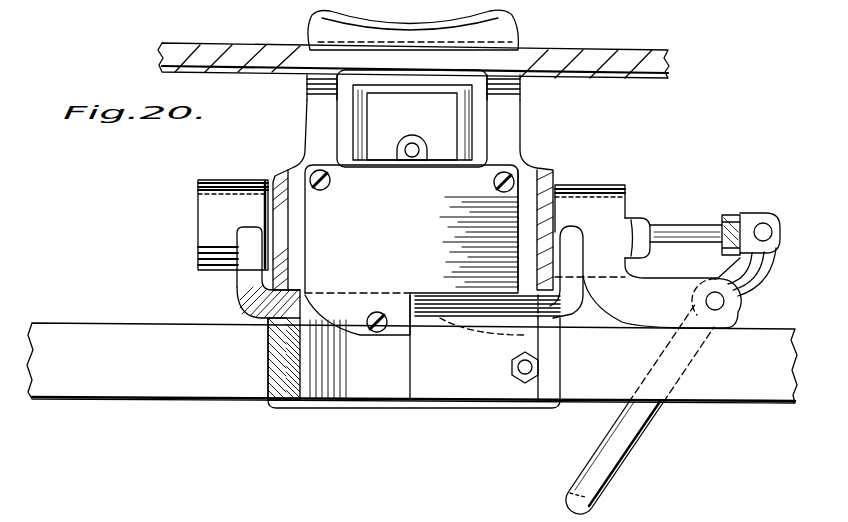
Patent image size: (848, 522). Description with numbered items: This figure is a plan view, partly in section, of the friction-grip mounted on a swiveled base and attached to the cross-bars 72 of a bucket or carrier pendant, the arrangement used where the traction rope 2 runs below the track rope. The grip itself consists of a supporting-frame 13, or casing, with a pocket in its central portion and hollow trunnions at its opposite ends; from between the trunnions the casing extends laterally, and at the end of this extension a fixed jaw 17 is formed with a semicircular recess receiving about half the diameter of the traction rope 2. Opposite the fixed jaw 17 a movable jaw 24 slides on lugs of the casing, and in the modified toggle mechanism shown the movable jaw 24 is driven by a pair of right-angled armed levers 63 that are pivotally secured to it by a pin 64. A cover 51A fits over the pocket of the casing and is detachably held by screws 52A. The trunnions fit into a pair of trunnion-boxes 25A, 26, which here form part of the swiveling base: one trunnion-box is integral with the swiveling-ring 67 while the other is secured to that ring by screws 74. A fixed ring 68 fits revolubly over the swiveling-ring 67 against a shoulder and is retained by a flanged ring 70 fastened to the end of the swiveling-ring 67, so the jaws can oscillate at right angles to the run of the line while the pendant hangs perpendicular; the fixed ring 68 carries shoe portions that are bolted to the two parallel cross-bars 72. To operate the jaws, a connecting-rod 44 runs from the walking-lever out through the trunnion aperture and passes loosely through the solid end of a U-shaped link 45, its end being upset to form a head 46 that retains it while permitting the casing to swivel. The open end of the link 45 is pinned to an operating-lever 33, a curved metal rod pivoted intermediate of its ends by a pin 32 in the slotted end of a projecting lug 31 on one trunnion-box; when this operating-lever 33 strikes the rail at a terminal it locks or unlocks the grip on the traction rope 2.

The traction rope 2 is at (186, 57).
The fixed jaw 17 is at (383, 32).
The supporting-frame 13 is at (538, 175).
The movable jaw 24 is at (413, 125).
The right-angled armed levers 63 is at (426, 143).
The pin 64 is at (407, 147).
The cover 51A is at (411, 229).
The screws 52A is at (340, 190).
The trunnion-box 25A is at (215, 205).
The trunnion-box 26 is at (612, 210).
The connecting-rod 44 is at (672, 233).
The link 45 is at (759, 211).
The head 46 is at (770, 258).
The projecting lug 31 is at (662, 293).
The pin 32 is at (724, 302).
The operating-lever 33 is at (635, 428).
The cross-bars 72 is at (412, 363).
The fixed ring 68 is at (268, 360).
The swiveling-ring 67 is at (372, 395).
The flanged ring 70 is at (470, 410).
The screws 74 is at (236, 300).